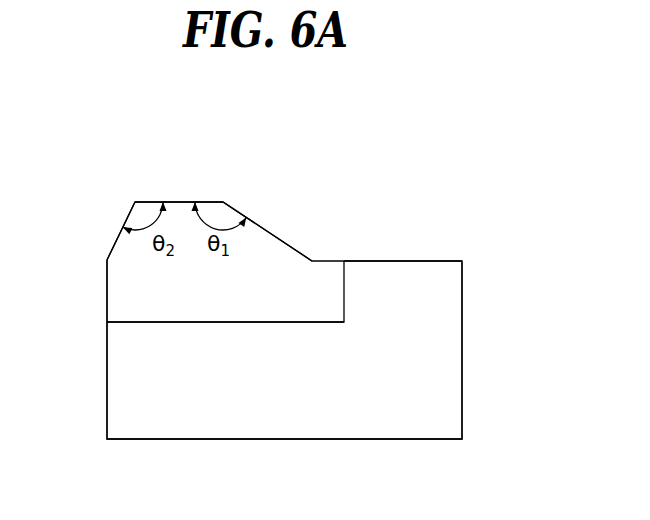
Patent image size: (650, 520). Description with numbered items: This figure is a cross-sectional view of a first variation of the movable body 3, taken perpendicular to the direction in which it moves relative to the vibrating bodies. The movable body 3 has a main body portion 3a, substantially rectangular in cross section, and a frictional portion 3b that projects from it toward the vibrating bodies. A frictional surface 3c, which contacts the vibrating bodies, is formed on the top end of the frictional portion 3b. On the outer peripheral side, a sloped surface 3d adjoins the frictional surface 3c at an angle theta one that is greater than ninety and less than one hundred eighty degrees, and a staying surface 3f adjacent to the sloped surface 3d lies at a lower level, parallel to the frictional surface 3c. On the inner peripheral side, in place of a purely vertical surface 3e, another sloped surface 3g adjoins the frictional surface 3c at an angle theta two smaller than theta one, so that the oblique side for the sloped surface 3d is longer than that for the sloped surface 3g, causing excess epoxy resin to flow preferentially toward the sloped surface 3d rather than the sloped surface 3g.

The movable body 3 is at (272, 152).
The main body portion 3a is at (448, 386).
The frictional portion 3b is at (113, 278).
The frictional surface 3c is at (183, 202).
The sloped surface 3d is at (277, 238).
The vertical surface 3e is at (110, 305).
The staying surface 3f is at (408, 261).
The other sloped surface 3g is at (128, 217).